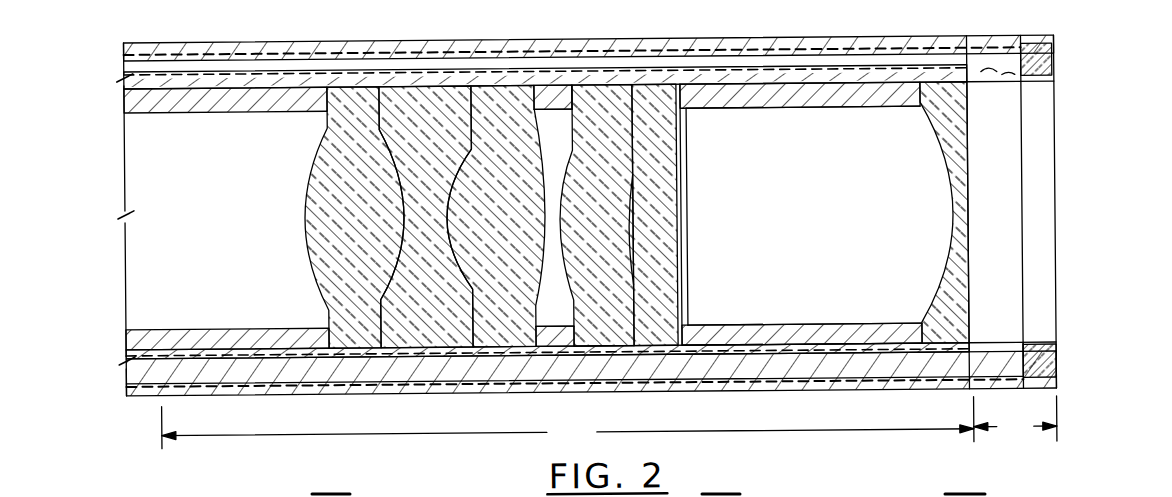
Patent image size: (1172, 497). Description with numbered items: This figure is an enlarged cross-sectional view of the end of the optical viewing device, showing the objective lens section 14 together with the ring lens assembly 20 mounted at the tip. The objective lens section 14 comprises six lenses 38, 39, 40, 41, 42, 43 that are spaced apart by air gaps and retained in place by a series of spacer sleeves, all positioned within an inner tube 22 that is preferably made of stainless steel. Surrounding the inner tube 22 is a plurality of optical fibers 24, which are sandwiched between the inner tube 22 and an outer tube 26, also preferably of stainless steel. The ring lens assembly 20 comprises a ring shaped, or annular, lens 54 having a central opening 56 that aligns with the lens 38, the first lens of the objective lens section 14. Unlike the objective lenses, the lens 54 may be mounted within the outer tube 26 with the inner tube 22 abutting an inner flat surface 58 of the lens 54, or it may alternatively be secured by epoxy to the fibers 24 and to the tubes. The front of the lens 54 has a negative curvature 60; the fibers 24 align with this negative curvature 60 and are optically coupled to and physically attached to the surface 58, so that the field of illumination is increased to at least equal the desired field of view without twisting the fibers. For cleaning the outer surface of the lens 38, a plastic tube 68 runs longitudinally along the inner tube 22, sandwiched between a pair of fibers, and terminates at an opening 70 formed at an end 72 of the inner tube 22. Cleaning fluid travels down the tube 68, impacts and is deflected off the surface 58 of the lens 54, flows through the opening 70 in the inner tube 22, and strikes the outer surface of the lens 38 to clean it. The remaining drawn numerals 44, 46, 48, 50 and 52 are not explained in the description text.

The objective lens section 14 is at (568, 426).
The ring lens assembly 20 is at (1015, 419).
The inner tube 22 is at (808, 84).
The optical fibers 24 is at (722, 372).
The outer tube 26 is at (1056, 40).
The lens 38 is at (958, 340).
The lens 39 is at (625, 348).
The lens 40 is at (576, 350).
The lens 41 is at (492, 352).
The lens 42 is at (432, 352).
The lens 43 is at (360, 358).
The lens element 44 is at (650, 342).
The retaining ring 46 is at (817, 346).
The lens element 48 is at (548, 352).
The air space 50 is at (790, 293).
The air space spacer 52 is at (544, 314).
The ring shaped lens 54 is at (1048, 70).
The central opening 56 is at (1052, 290).
The inner flat surface 58 is at (1023, 352).
The negative curvature 60 is at (1057, 62).
The plastic tube 68 is at (234, 75).
The opening 70 is at (1010, 80).
The end 72 is at (997, 72).